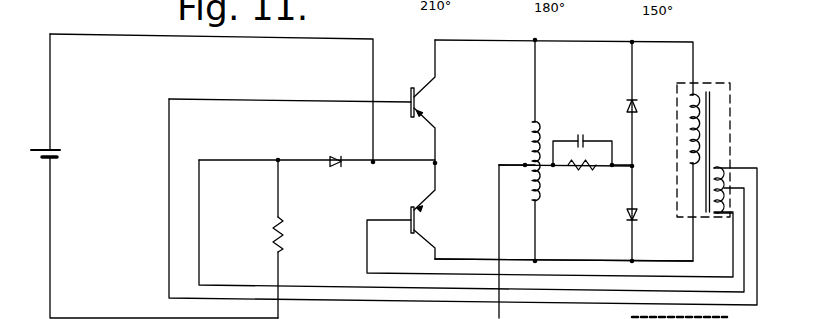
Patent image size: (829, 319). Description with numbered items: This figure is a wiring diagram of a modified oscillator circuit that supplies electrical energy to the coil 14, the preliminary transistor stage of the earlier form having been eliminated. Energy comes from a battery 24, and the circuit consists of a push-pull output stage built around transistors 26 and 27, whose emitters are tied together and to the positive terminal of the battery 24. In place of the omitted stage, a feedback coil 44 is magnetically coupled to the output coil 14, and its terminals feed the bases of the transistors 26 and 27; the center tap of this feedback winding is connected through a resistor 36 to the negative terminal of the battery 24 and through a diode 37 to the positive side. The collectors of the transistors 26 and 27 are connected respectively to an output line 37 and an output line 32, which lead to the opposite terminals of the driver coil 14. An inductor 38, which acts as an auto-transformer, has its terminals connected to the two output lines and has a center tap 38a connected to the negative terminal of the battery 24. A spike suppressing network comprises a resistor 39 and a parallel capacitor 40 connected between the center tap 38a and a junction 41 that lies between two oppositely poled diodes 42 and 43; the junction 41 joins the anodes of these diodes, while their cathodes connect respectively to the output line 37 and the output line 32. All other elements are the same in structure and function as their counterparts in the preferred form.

The coil 14 is at (703, 113).
The battery 24 is at (57, 149).
The transistor 26 is at (411, 90).
The transistor 27 is at (415, 222).
The output line 32 is at (560, 260).
The resistor 36 is at (282, 236).
The diode / output line 37 is at (339, 157).
The inductor 38 is at (530, 134).
The center tap 38a is at (524, 161).
The resistor 39 is at (577, 172).
The capacitor 40 is at (584, 135).
The junction 41 is at (634, 165).
The diode 42 is at (628, 106).
The diode 43 is at (626, 214).
The feedback coil 44 is at (716, 216).